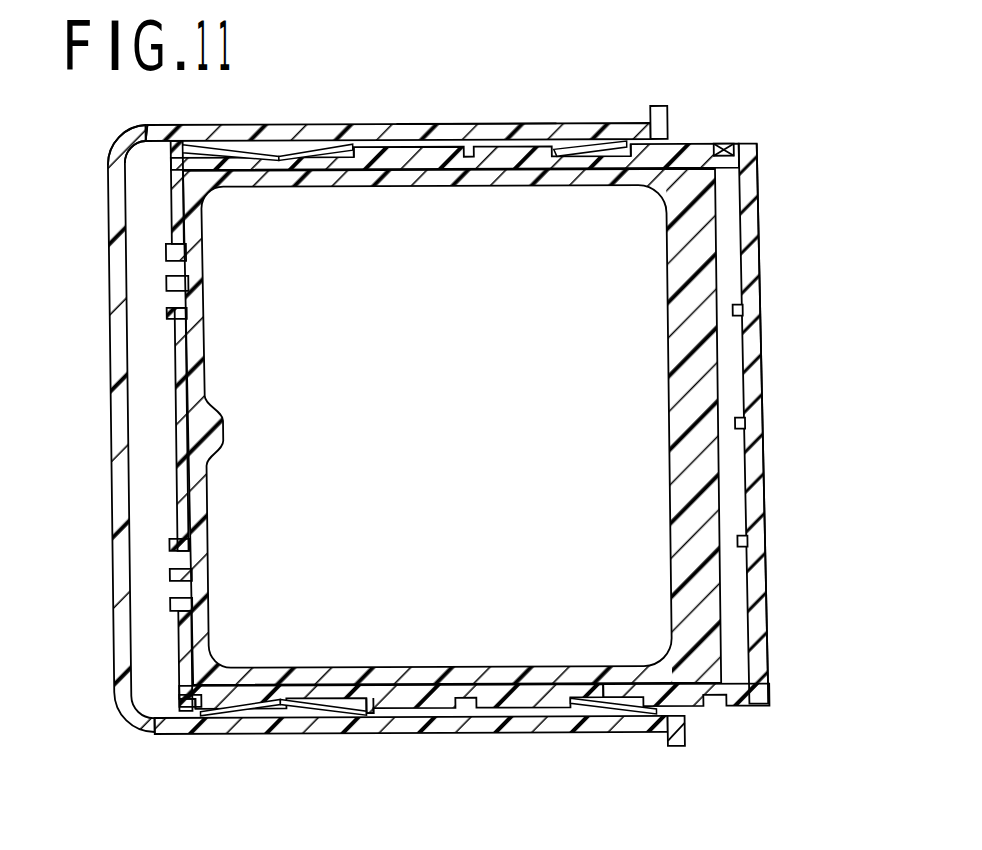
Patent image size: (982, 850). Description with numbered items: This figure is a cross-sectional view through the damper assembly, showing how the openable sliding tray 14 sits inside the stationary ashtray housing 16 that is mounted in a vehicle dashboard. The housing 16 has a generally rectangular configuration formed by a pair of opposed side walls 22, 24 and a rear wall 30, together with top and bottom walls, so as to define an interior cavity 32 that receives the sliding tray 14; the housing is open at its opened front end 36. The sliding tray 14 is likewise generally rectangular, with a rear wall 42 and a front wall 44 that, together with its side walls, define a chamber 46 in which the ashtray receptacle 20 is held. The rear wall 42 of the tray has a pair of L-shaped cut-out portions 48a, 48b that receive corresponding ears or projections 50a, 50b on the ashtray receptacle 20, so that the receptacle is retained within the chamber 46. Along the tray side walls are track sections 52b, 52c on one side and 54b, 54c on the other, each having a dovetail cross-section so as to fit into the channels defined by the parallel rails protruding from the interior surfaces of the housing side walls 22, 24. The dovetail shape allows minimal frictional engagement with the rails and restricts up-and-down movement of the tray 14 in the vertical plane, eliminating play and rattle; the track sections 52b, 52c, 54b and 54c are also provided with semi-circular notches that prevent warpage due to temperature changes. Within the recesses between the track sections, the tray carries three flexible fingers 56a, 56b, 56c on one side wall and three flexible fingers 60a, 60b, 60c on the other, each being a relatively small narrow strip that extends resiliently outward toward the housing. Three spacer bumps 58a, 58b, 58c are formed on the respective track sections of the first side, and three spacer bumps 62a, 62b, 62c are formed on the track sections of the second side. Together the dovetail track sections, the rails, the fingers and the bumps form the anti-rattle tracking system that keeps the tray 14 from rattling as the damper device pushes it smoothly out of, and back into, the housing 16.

The sliding tray 14 is at (766, 183).
The stationary ashtray housing 16 is at (482, 112).
The ashtray receptacle 20 is at (495, 196).
The side wall 22 is at (432, 734).
The side wall 24 is at (407, 122).
The rear wall 30 is at (111, 388).
The interior cavity 32 is at (147, 173).
The opened front end 36 is at (667, 127).
The rear wall 42 is at (173, 425).
The front wall 44 is at (760, 368).
The chamber 46 is at (200, 680).
The L-shaped cut-out portion 48a is at (180, 608).
The L-shaped cut-out portion 48b is at (172, 250).
The ear or projection 50a is at (173, 542).
The ear or projection 50b is at (172, 312).
The track section 52b is at (543, 698).
The track section 52c is at (670, 700).
The track section 54b is at (507, 157).
The track section 54c is at (727, 152).
The flexible finger 56a is at (237, 711).
The flexible finger 56b is at (317, 713).
The flexible finger 56c is at (588, 709).
The spacer bump 58a is at (185, 718).
The spacer bump 58b is at (373, 710).
The spacer bump 58c is at (657, 707).
The flexible finger 60a is at (237, 147).
The flexible finger 60b is at (299, 147).
The flexible finger 60c is at (577, 146).
The spacer bump 62a is at (172, 147).
The spacer bump 62b is at (362, 147).
The spacer bump 62c is at (647, 140).